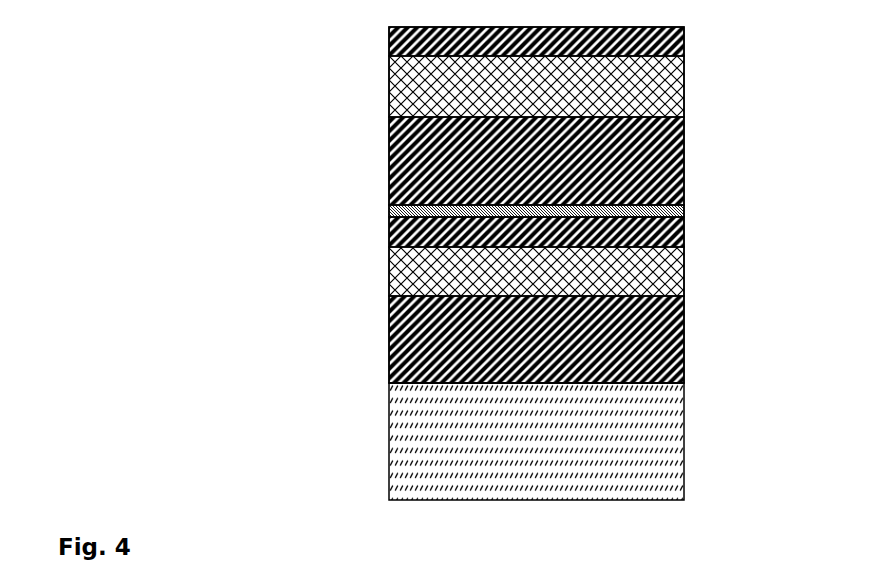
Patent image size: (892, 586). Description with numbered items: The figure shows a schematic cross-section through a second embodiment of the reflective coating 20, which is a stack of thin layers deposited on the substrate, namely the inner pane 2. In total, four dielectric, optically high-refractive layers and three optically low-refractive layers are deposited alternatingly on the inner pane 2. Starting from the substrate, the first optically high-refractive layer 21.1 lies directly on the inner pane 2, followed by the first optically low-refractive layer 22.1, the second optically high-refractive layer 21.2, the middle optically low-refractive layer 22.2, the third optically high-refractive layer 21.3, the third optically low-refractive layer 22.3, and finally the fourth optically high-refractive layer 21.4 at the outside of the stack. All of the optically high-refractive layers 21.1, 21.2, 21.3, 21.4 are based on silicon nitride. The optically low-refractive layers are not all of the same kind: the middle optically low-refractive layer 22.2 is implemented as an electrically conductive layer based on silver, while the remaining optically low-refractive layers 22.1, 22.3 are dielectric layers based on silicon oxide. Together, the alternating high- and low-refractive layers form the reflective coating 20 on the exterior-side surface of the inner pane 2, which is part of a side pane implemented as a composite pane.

The reflective coating 20 is at (362, 26).
The fourth optically high-refractive layer 21.4 is at (676, 43).
The third optically low-refractive layer 22.3 is at (418, 85).
The third optically high-refractive layer 21.3 is at (676, 163).
The middle optically low-refractive layer 22.2 is at (415, 211).
The second optically high-refractive layer 21.2 is at (676, 232).
The first optically low-refractive layer 22.1 is at (418, 275).
The first optically high-refractive layer 21.1 is at (676, 324).
The inner pane 2 is at (650, 445).